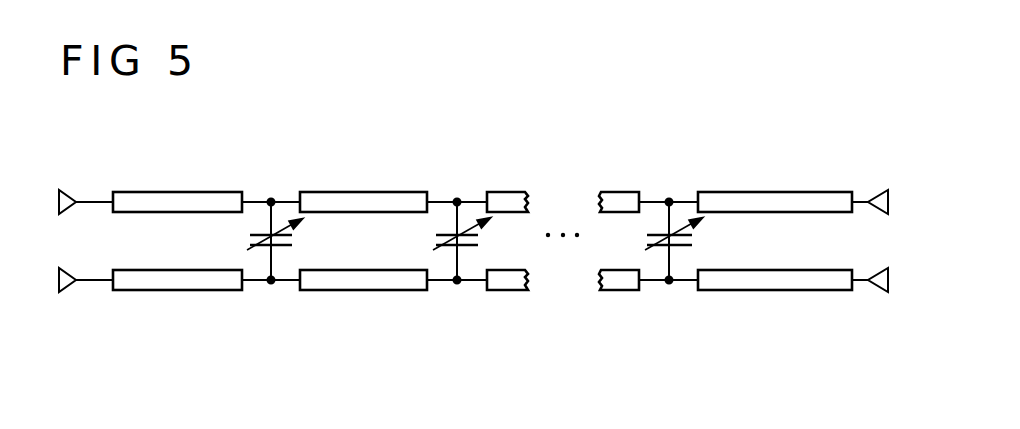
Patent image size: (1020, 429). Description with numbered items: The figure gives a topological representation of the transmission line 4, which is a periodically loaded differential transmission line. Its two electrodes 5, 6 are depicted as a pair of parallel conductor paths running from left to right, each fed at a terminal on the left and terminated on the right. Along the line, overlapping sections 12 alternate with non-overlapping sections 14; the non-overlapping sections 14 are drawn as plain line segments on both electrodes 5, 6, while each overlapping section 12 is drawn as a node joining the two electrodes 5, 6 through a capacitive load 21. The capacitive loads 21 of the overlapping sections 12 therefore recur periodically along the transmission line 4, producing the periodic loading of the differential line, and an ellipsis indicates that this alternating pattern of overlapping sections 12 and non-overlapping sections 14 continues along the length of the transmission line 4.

The transmission line 4 is at (554, 202).
The electrode 5 is at (90, 283).
The electrode 6 is at (90, 198).
The overlapping section 12 is at (303, 304).
The non-overlapping section 14 is at (240, 304).
The capacitive load 21 is at (287, 211).